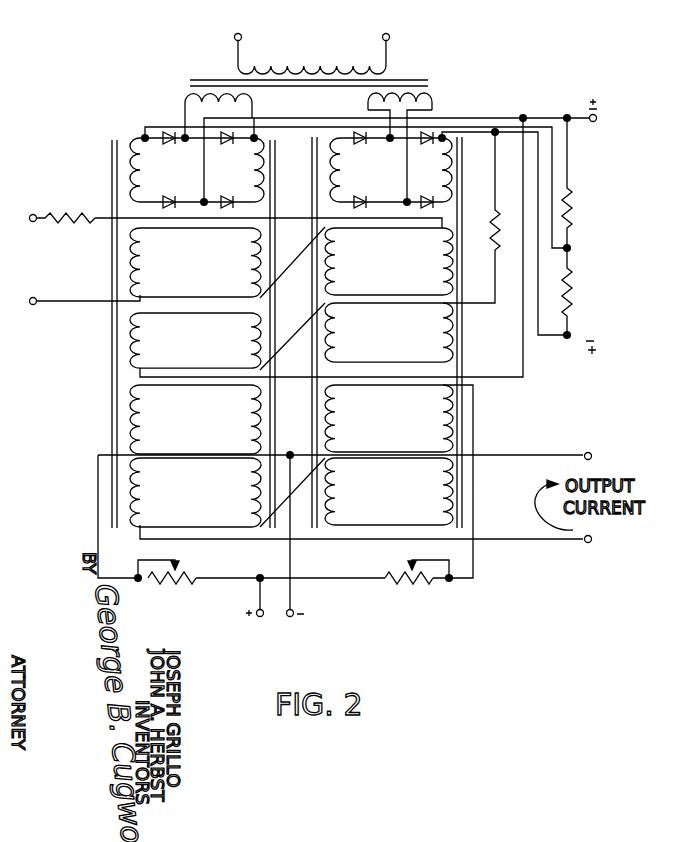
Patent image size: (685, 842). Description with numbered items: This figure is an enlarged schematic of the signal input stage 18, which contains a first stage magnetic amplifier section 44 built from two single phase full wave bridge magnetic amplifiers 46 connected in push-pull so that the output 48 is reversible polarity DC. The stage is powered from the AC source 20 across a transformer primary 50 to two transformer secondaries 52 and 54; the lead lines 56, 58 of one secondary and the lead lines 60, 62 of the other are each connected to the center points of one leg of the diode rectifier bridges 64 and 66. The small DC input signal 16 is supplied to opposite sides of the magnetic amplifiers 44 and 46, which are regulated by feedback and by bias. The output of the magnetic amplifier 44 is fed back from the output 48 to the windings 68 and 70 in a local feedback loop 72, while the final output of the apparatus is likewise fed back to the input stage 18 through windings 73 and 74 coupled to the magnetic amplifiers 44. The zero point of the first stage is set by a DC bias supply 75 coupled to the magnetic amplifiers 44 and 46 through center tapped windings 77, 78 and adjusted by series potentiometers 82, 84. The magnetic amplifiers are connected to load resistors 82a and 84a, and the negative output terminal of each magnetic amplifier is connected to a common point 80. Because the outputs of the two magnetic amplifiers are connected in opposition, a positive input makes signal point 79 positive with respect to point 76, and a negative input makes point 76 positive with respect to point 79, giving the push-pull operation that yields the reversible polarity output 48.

The lead line of transformer secondary 60 is at (340, 31).
The transformer primary 50 is at (326, 61).
The AC source 20 is at (426, 66).
The transformer secondary 52 is at (183, 97).
The transformer secondary 54 is at (433, 102).
The lead line of transformer secondary 56 is at (184, 117).
The lead line of transformer secondary 58 is at (251, 118).
The lead line of transformer secondary 62 is at (368, 112).
The diode rectifier bridge 64 is at (184, 183).
The diode rectifier bridge 66 is at (382, 184).
The input signal 16 is at (72, 180).
The signal input stage 18 is at (84, 339).
The single phase full wave bridge magnetic amplifier 46 is at (301, 251).
The local feedback winding 68 is at (207, 355).
The local feedback winding 70 is at (396, 348).
The local feedback loop 72 is at (505, 362).
The first stage magnetic amplifier section 44 is at (77, 397).
The center tapped winding 77 is at (208, 434).
The center tapped winding 78 is at (400, 428).
The final feedback winding 73 is at (198, 505).
The final feedback winding 74 is at (400, 500).
The series potentiometer 82 is at (157, 585).
The series potentiometer 84 is at (395, 585).
The DC bias supply 75 is at (320, 611).
The signal point 79 is at (598, 118).
The load resistor 84a is at (571, 212).
The common point 80 is at (570, 248).
The output 48 is at (647, 285).
The load resistor 82a is at (571, 296).
The signal point 76 is at (571, 335).